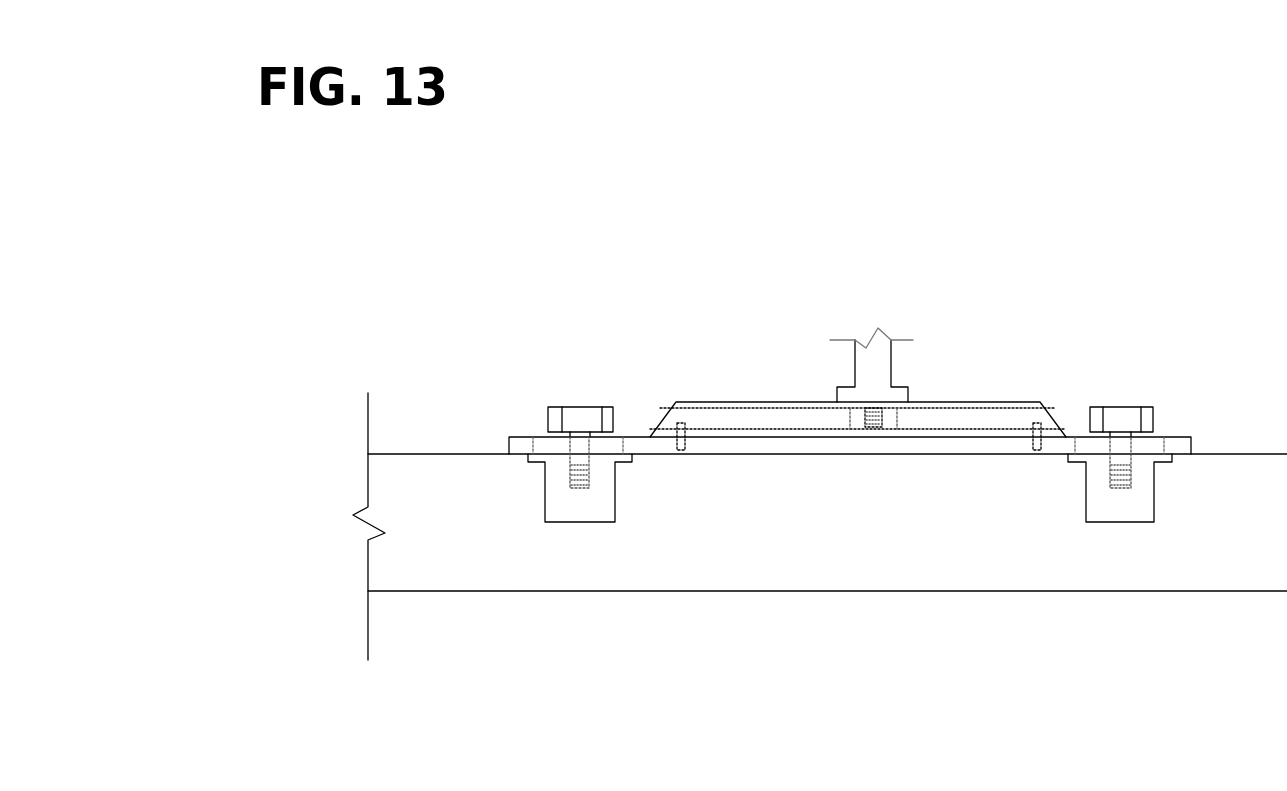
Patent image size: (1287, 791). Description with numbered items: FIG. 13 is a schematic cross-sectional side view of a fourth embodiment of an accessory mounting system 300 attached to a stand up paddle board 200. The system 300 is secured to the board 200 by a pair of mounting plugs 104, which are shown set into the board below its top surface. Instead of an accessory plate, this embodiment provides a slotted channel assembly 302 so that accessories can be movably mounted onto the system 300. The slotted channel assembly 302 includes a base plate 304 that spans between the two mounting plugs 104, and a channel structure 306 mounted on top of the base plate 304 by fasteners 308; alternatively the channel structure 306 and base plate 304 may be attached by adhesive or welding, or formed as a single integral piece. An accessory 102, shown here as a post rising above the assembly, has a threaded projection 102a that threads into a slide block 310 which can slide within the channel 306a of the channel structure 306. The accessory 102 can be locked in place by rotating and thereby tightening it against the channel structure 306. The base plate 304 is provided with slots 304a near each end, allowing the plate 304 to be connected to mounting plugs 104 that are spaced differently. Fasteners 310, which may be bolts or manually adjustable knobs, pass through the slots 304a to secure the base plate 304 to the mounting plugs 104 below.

The accessory 102 is at (885, 362).
The threaded projection 102a is at (883, 408).
The mounting plug 104 is at (567, 517).
The stand up paddle board 200 is at (462, 472).
The accessory mounting system 300 is at (625, 303).
The slotted channel assembly 302 is at (1058, 382).
The base plate 304 is at (864, 402).
The slots 304a is at (543, 445).
The channel structure 306 is at (863, 386).
The channel 306a is at (710, 420).
The fasteners 308 is at (679, 430).
The slide block / fasteners 310 is at (583, 417).